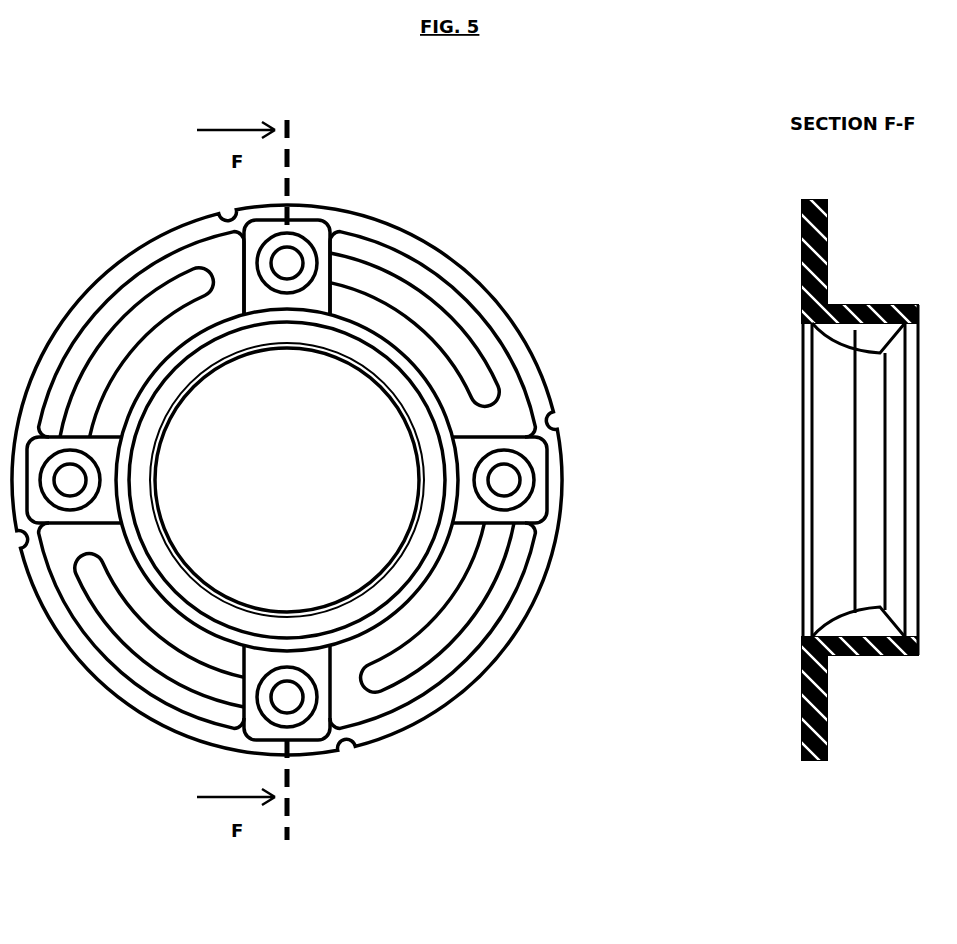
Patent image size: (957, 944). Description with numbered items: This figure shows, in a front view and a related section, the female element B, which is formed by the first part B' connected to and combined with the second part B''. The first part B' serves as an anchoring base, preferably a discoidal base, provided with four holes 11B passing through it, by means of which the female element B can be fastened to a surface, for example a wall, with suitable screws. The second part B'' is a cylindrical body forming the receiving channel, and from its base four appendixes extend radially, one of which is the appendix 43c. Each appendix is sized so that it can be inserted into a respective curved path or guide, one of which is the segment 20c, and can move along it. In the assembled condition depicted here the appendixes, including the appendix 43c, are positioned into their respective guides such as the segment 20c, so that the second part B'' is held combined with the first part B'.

The female element B is at (300, 566).
The first part B' is at (296, 498).
The second part B'' is at (287, 480).
The appendix 43c is at (322, 287).
The segment 20c is at (415, 302).
The hole 11B is at (510, 485).